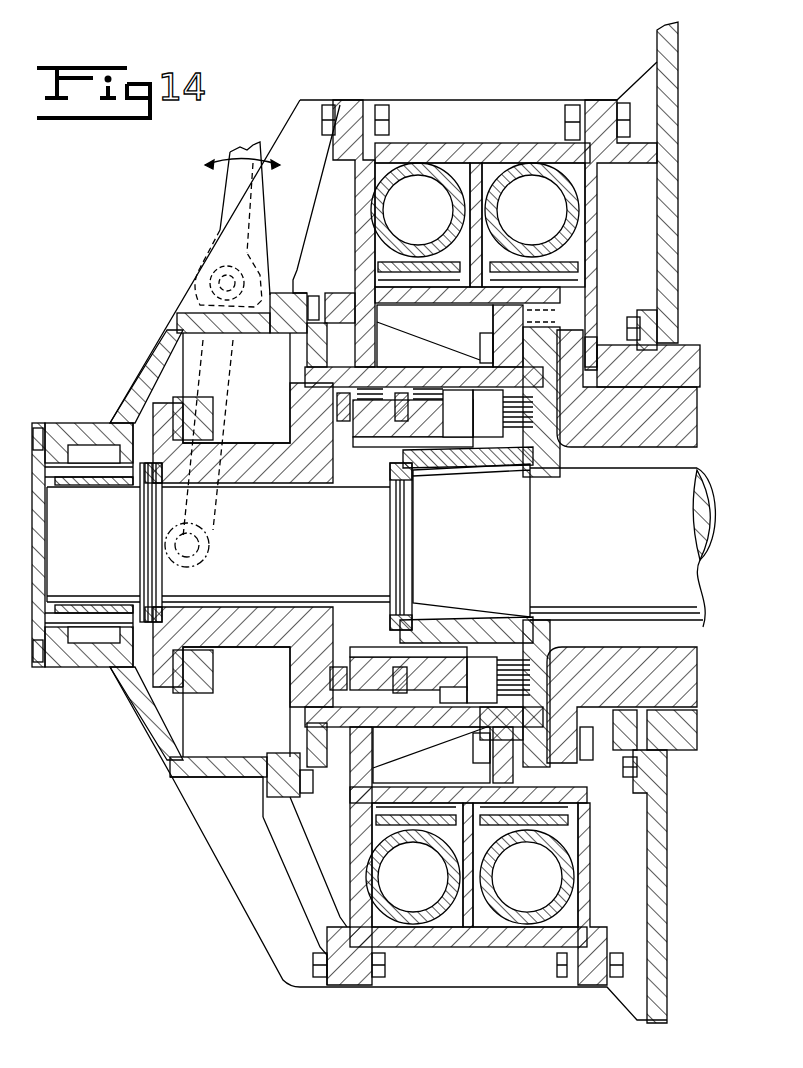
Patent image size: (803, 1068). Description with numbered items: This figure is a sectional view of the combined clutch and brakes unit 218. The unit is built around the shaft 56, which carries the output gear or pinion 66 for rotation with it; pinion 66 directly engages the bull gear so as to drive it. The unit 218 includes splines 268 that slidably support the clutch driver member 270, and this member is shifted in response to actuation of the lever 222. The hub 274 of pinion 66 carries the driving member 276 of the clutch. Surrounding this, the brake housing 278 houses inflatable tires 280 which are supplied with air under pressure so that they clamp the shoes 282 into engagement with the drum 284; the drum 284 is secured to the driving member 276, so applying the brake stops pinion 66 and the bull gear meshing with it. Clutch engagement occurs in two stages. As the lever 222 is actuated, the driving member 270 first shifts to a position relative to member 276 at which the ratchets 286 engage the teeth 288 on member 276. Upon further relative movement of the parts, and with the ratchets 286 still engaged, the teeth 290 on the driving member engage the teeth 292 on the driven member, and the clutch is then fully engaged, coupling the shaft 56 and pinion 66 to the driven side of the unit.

The shaft 56 is at (713, 487).
The output gear 66 is at (703, 418).
The combined clutch and brakes unit 218 is at (210, 215).
The lever 222 is at (200, 285).
The splines 268 is at (533, 635).
The clutch driver member 270 is at (267, 473).
The hub 274 is at (580, 707).
The driving member 276 is at (543, 347).
The brake housing 278 is at (360, 100).
The inflatable tires 280 is at (423, 163).
The shoes 282 is at (367, 260).
The drum 284 is at (597, 293).
The ratchets 286 is at (343, 393).
The teeth 288 is at (390, 387).
The teeth 290 is at (463, 390).
The teeth 292 is at (537, 433).